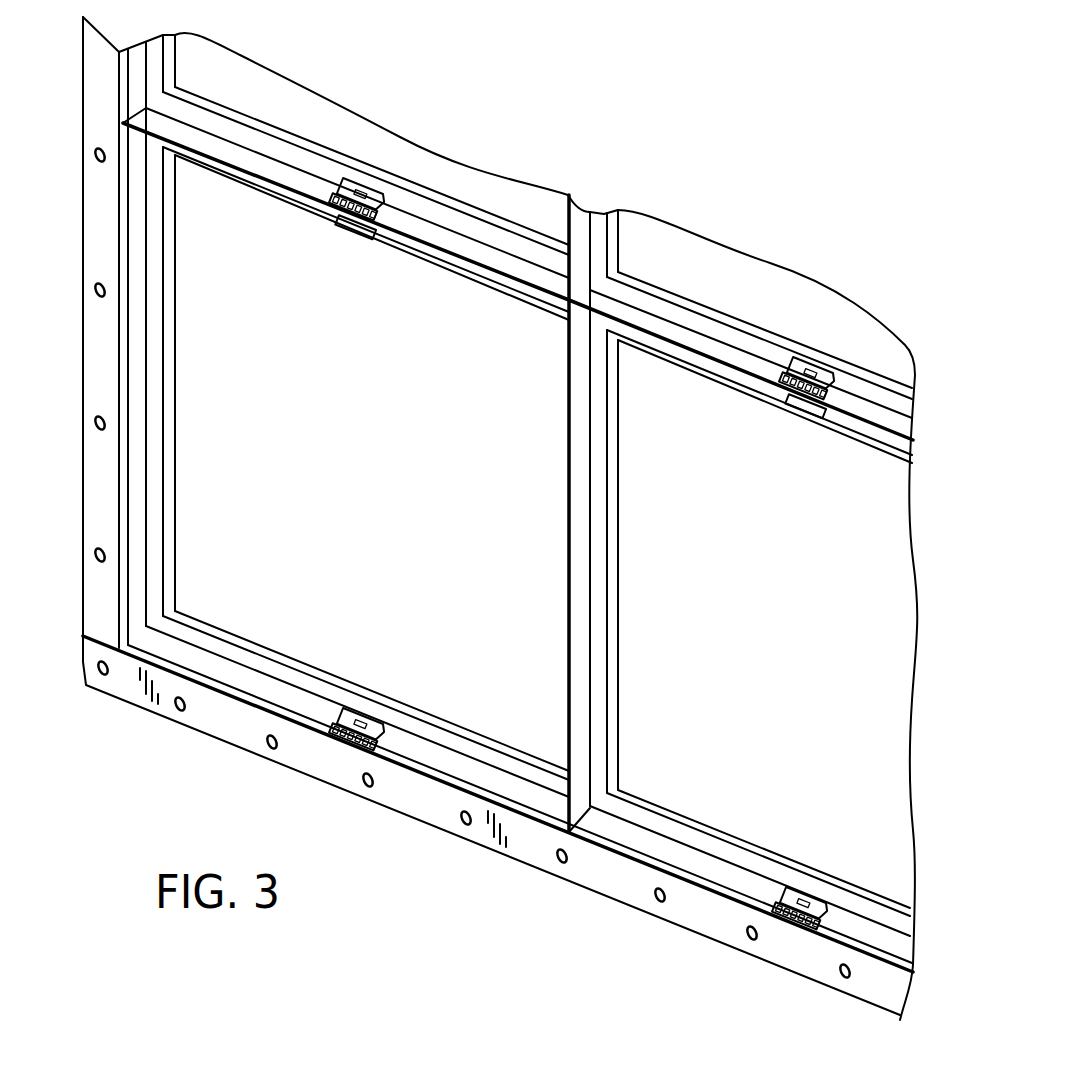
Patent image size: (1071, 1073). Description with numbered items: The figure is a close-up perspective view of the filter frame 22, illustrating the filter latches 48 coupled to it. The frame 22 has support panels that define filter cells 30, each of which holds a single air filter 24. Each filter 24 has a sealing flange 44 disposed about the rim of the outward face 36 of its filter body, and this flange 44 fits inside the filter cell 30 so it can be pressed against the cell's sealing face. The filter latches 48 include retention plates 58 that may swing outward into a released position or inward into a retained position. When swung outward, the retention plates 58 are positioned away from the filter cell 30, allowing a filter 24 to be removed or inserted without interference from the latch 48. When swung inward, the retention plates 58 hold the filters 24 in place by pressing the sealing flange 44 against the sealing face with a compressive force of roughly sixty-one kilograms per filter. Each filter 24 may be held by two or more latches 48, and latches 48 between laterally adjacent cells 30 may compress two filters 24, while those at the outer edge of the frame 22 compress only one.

The filter frame 22 is at (100, 665).
The air filter 24 is at (472, 518).
The filter cell 30 is at (142, 85).
The outward face 36 is at (355, 494).
The sealing flange 44 is at (150, 573).
The filter latch 48 is at (362, 156).
The retention plate 58 is at (372, 200).